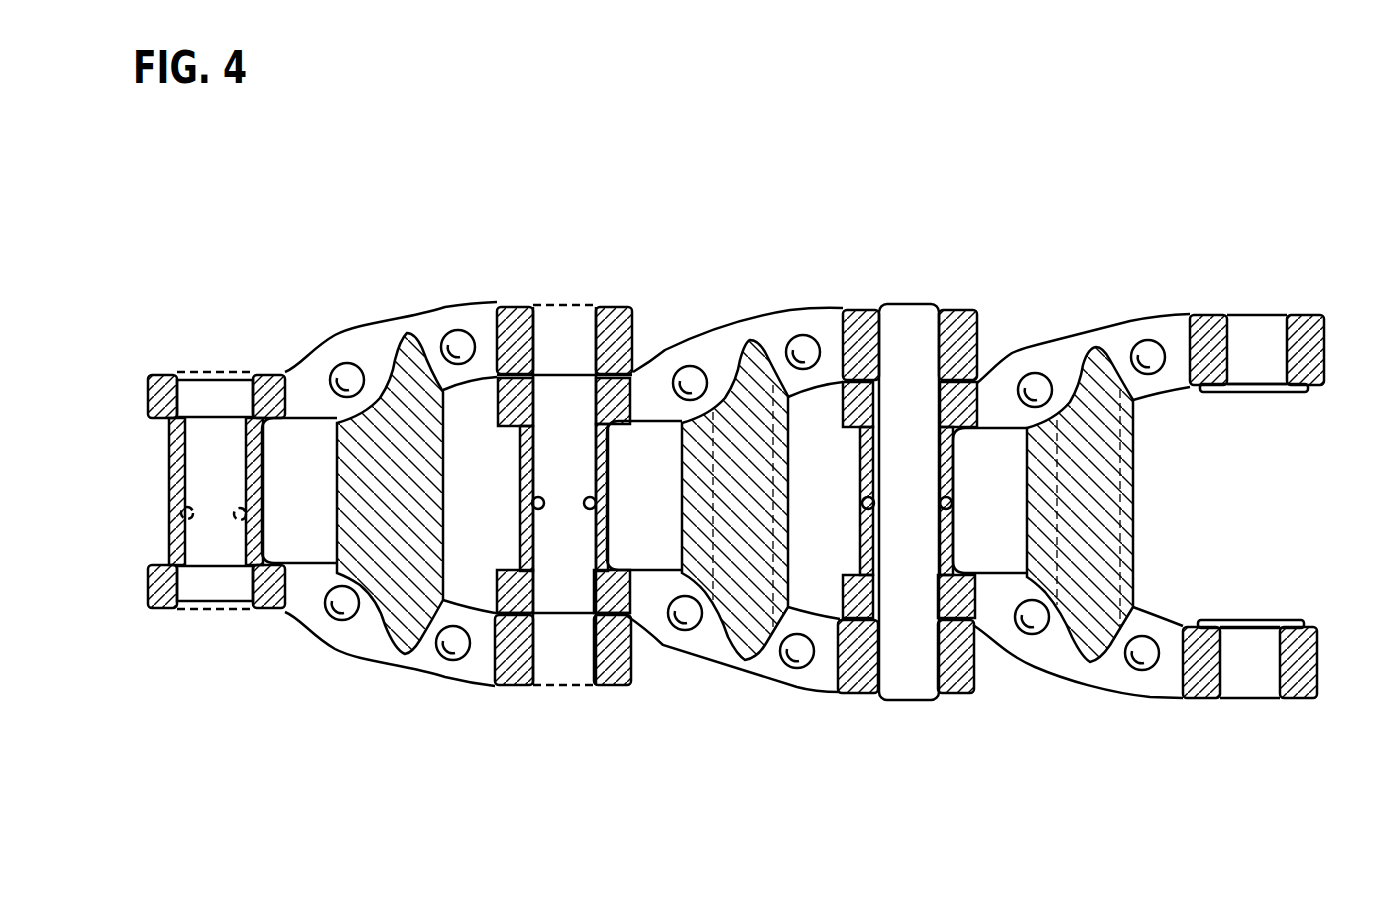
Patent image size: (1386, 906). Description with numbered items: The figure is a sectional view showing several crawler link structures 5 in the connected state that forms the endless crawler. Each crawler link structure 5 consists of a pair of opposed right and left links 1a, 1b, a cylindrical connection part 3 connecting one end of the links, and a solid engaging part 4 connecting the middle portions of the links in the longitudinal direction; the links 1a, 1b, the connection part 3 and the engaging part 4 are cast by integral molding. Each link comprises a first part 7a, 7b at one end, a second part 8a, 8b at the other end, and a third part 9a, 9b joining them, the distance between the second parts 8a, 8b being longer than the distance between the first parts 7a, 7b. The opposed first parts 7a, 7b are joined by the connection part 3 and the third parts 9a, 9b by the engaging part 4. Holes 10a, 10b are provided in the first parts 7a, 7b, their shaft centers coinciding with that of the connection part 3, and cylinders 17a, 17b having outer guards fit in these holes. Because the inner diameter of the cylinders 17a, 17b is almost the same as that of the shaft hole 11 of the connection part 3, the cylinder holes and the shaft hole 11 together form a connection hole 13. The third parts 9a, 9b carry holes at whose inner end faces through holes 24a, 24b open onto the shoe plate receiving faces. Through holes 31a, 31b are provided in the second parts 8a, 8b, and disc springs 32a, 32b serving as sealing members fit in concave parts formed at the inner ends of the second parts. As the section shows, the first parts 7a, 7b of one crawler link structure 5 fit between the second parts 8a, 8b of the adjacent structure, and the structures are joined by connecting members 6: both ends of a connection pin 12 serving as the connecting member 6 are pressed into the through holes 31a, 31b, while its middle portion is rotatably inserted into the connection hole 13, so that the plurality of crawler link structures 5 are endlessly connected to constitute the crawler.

The link 1a is at (501, 302).
The link 1b is at (496, 690).
The connection part 3 is at (268, 448).
The engaging part 4 is at (447, 463).
The crawler link structure 5 is at (481, 283).
The connecting member 6 is at (898, 300).
The first part 7a is at (155, 372).
The first part 7b is at (156, 612).
The second part 8a is at (862, 305).
The second part 8b is at (842, 700).
The third part 9a is at (395, 322).
The third part 9b is at (388, 662).
The hole 10a is at (245, 372).
The hole 10b is at (245, 612).
The shaft hole 11 is at (247, 513).
The connection pin 12 is at (912, 322).
The connection hole 13 is at (180, 513).
The cylinder 17a is at (596, 405).
The cylinder 17b is at (595, 590).
The through hole 24a is at (349, 364).
The through hole 24b is at (343, 625).
The through hole 31a is at (598, 302).
The through hole 31b is at (585, 692).
The disc spring 32a is at (1277, 394).
The disc spring 32b is at (1272, 622).